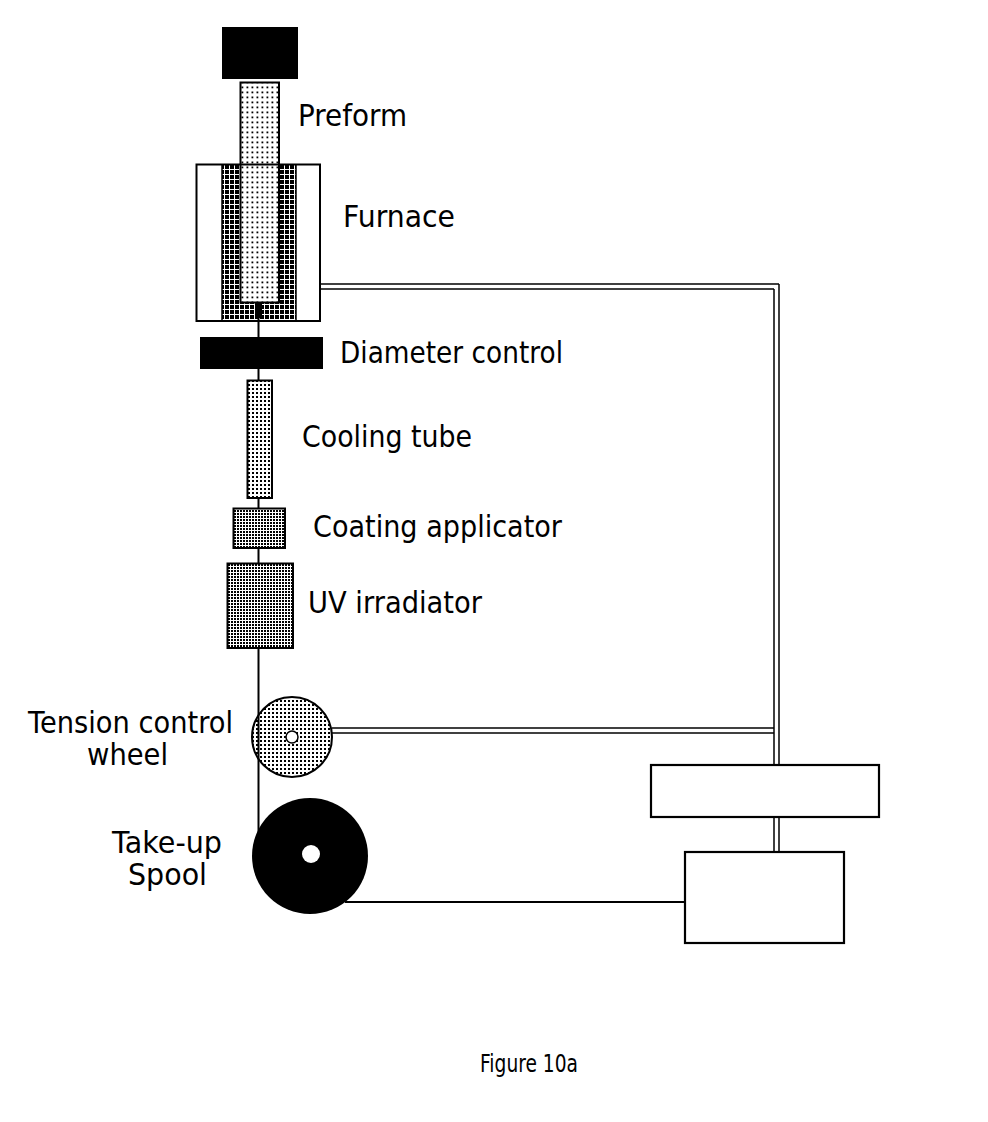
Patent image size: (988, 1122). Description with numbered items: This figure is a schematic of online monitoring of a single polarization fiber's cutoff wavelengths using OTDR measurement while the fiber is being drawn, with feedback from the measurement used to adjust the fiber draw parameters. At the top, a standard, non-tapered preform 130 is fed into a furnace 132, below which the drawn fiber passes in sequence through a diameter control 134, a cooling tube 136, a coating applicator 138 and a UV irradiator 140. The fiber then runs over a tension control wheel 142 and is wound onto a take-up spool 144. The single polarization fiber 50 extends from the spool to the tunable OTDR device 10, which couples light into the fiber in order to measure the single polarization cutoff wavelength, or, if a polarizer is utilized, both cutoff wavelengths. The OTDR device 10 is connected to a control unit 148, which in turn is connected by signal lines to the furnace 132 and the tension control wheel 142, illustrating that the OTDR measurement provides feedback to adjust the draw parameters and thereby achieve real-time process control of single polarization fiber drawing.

The preform 130 is at (217, 116).
The furnace 132 is at (183, 217).
The diameter control 134 is at (200, 355).
The cooling tube 136 is at (235, 440).
The coating applicator 138 is at (218, 526).
The UV irradiator 140 is at (217, 595).
The tension control wheel 142 is at (337, 713).
The take-up spool 144 is at (372, 852).
The control unit 148 is at (838, 773).
The single polarization fiber 50 is at (522, 890).
The OTDR device 10 is at (845, 917).